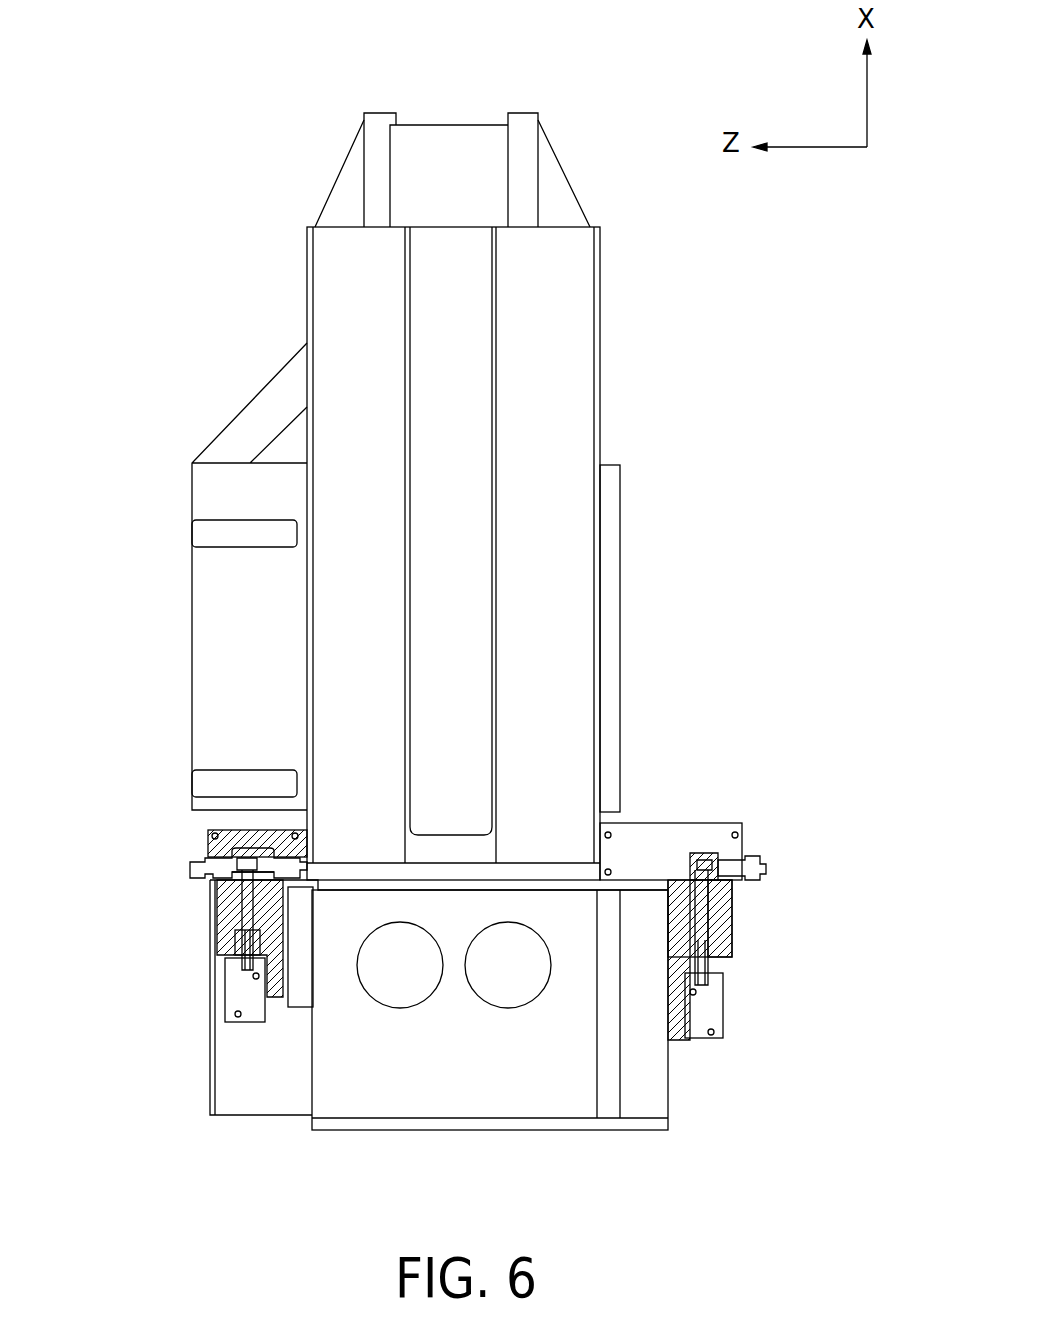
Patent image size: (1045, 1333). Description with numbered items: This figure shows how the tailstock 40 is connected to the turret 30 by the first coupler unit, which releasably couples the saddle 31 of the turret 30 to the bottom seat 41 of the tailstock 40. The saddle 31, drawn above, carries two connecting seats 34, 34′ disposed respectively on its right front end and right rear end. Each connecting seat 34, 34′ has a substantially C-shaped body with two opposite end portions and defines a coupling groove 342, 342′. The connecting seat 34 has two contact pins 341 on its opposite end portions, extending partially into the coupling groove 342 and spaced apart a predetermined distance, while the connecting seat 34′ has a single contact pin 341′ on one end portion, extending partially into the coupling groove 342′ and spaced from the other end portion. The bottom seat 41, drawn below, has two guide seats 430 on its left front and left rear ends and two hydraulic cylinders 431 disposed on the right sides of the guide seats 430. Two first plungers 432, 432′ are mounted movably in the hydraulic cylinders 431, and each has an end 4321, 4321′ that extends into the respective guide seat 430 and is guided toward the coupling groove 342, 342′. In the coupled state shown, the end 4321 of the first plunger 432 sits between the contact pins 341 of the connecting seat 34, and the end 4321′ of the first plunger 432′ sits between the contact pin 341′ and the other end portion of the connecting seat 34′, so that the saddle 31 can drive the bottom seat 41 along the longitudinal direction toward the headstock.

The turret 30 is at (661, 552).
The saddle 31 is at (580, 613).
The connecting seat 34 is at (207, 838).
The connecting seat 34′ is at (700, 828).
The contact pins 341 is at (293, 858).
The contact pin 341′ is at (760, 865).
The coupling groove 342 is at (262, 852).
The coupling groove 342′ is at (700, 860).
The end of first plunger 4321 is at (235, 872).
The end of first plunger 4321′ is at (718, 857).
The first plunger 432 is at (238, 913).
The first plunger 432′ is at (732, 893).
The guide seat 430 is at (235, 938).
The hydraulic cylinder 431 is at (226, 993).
The tailstock 40 is at (679, 1077).
The bottom seat 41 is at (577, 1095).